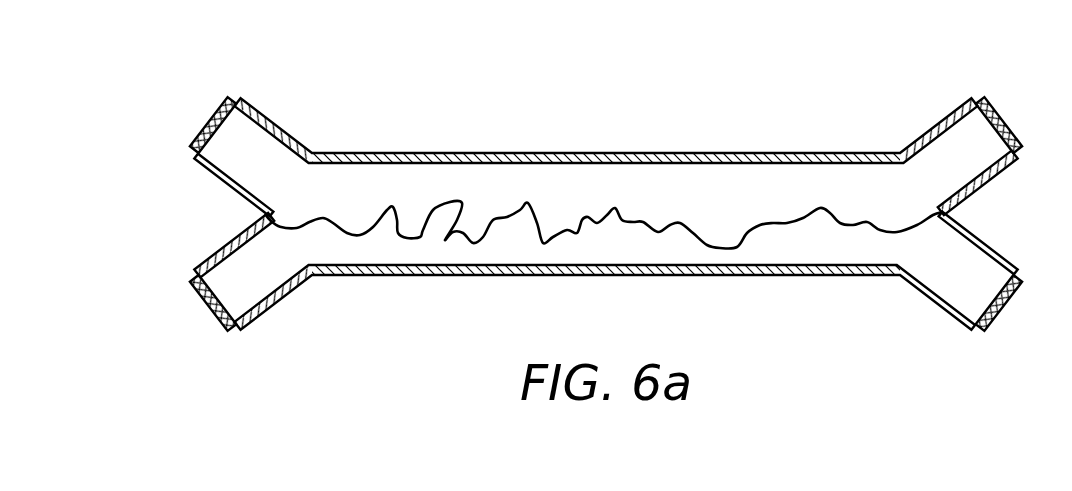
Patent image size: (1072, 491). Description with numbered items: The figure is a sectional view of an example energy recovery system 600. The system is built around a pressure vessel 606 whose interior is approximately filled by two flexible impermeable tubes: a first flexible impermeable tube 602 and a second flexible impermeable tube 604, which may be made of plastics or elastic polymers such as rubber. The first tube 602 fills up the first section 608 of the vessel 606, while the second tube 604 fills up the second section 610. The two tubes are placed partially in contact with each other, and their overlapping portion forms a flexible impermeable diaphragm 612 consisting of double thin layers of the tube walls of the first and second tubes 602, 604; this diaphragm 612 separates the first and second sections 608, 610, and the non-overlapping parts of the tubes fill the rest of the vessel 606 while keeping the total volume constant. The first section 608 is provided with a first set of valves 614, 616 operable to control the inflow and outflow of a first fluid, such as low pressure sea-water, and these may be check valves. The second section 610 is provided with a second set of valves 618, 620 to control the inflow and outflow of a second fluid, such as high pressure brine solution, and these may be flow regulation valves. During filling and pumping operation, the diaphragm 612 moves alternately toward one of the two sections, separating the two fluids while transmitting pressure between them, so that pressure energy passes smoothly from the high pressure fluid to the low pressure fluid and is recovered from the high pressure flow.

The energy recovery system 600 is at (800, 64).
The first flexible impermeable tube 602 is at (600, 276).
The second flexible impermeable tube 604 is at (633, 155).
The pressure vessel 606 is at (728, 153).
The first section 608 is at (273, 290).
The second section 610 is at (352, 180).
The flexible impermeable diaphragm 612 is at (522, 205).
The first valve of first set 614 is at (213, 303).
The second valve of first set 616 is at (1001, 305).
The first valve of second set 618 is at (213, 130).
The second valve of second set 620 is at (1000, 128).